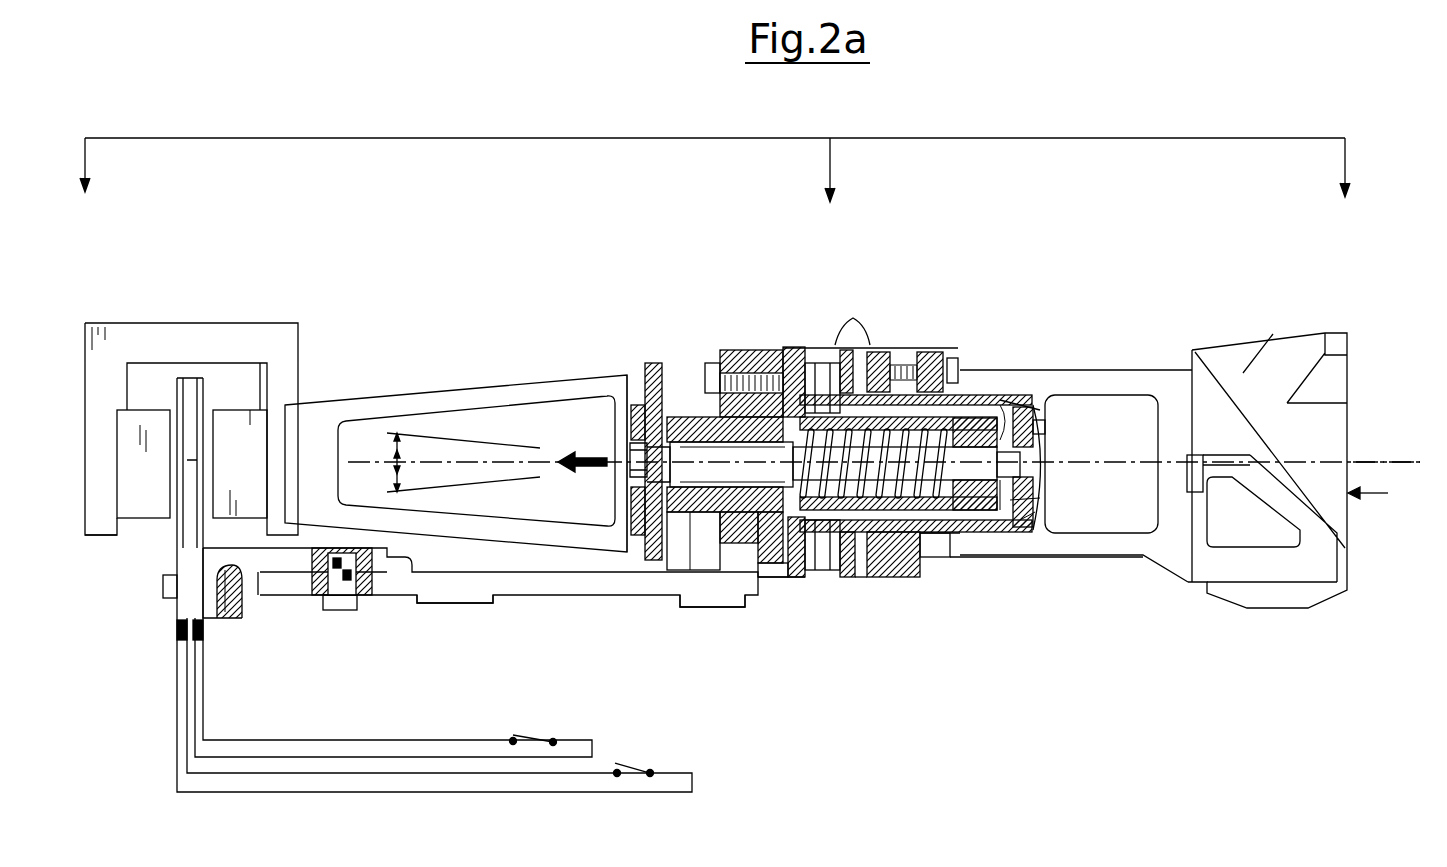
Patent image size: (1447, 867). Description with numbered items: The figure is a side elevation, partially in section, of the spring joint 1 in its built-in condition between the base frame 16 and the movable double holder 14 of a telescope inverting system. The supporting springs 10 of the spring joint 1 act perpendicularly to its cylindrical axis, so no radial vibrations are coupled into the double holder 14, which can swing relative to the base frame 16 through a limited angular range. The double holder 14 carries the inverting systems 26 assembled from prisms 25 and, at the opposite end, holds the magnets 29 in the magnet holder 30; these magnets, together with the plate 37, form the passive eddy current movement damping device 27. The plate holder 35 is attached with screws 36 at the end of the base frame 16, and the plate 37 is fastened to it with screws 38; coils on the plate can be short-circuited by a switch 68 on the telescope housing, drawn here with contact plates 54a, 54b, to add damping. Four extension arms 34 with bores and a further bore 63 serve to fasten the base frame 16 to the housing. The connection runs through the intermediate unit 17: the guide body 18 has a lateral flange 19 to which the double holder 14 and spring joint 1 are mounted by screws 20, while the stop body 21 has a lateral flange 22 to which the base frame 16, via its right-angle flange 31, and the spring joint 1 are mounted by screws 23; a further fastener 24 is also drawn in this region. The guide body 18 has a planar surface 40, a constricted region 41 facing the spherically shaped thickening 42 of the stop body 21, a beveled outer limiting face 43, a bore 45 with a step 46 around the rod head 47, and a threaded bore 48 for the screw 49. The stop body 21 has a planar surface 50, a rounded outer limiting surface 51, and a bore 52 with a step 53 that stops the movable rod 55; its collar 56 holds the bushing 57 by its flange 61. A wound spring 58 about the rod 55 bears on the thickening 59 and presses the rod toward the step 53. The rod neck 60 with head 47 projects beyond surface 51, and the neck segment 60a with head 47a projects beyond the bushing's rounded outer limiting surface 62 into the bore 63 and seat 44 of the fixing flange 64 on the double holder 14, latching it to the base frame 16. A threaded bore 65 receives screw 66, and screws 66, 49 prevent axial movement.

The spring joint 1 is at (852, 313).
The supporting springs 10 is at (822, 575).
The double holder 14 is at (404, 398).
The base frame 16 is at (518, 598).
The intermediate unit 17 is at (1038, 396).
The guide body 18 is at (1036, 393).
The lateral flange 19 is at (885, 352).
The screws 20 is at (925, 352).
The stop body 21 is at (1000, 398).
The lateral flange 22 is at (795, 350).
The screws 23 is at (735, 355).
The screw 24 is at (905, 350).
The prisms 25 is at (1280, 378).
The inverting prism systems 26 is at (1386, 493).
The passive movement damping device 27 is at (98, 546).
The magnets 29 is at (148, 428).
The magnet holder 30 is at (200, 340).
The flange 31 is at (757, 352).
The extension arms 34 is at (462, 608).
The plate holder 35 is at (225, 615).
The screws 36 is at (340, 610).
The plate 37 is at (178, 632).
The screws 38 is at (168, 600).
The surface 40 is at (1010, 480).
The constricted region 41 is at (795, 565).
The spherically shaped thickening 42 is at (808, 582).
The outer limiting face 43 is at (1040, 515).
The seat 44 is at (640, 560).
The bore 45 is at (1040, 498).
The step 46 is at (1035, 472).
The rod head 47 is at (1025, 458).
The rod head 47a is at (635, 447).
The threaded bore 48 is at (1045, 405).
The screw 49 is at (1042, 428).
The planar surface 50 is at (950, 430).
The outer limiting surface 51 is at (995, 512).
The bore 52 is at (1040, 504).
The step 53 is at (942, 540).
The contact plate 54a is at (277, 793).
The contact plate 54b is at (397, 760).
The movable rod 55 is at (925, 560).
The collar 56 is at (775, 580).
The bushing 57 is at (690, 417).
The spring 58 is at (885, 580).
The thickening 59 is at (738, 545).
The rod neck 60 is at (970, 520).
The neck segment 60a is at (648, 480).
The flange 61 is at (763, 580).
The outer limiting surface 62 is at (668, 560).
The bore 63 is at (700, 520).
The fixing flange 64 is at (653, 365).
The threaded bore 65 is at (639, 408).
The screw 66 is at (636, 428).
The switch 68 is at (637, 763).